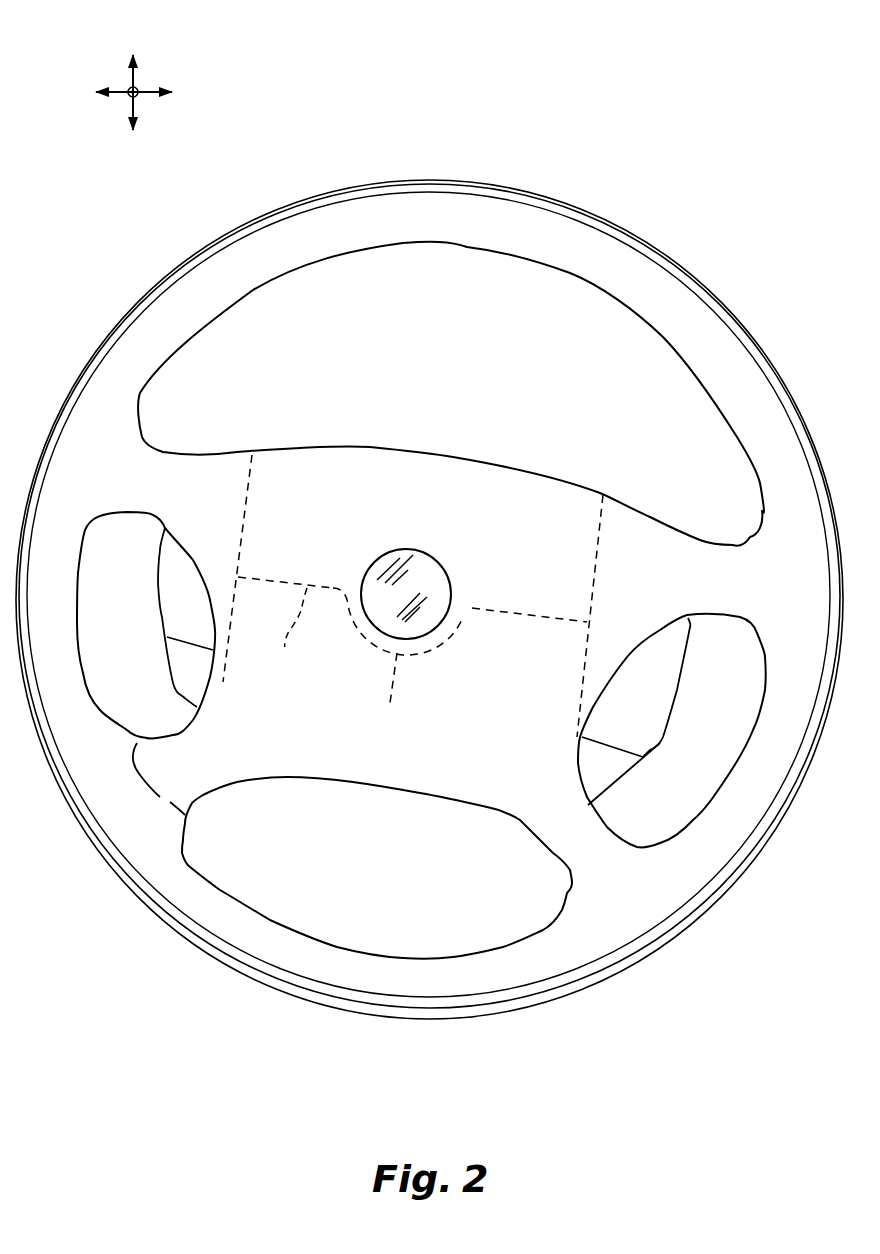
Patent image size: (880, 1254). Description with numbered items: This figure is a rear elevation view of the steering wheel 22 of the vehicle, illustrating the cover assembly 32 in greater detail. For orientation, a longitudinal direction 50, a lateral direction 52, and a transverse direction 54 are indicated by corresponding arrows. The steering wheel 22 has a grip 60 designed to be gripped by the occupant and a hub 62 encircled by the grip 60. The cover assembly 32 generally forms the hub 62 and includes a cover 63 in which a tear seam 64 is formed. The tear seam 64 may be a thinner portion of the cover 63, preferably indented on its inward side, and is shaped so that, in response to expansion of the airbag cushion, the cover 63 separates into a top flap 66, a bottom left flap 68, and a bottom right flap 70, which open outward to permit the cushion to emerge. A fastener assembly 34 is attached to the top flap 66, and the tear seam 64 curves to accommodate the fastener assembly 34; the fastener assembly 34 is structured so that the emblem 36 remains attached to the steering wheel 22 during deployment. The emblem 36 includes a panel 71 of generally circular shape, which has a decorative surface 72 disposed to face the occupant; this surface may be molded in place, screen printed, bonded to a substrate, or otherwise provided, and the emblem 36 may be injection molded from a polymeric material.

The steering wheel 22 is at (440, 532).
The longitudinal direction 50 is at (137, 97).
The lateral direction 52 is at (152, 88).
The transverse direction 54 is at (131, 74).
The grip 60 is at (745, 380).
The hub 62 is at (374, 392).
The cover 63 is at (317, 500).
The cover assembly 32 is at (525, 490).
The fastener assembly 34 is at (432, 556).
The emblem 36 is at (466, 573).
The tear seam 64 is at (307, 637).
The top flap 66 is at (383, 536).
The bottom left flap 68 is at (346, 727).
The bottom right flap 70 is at (532, 731).
The panel 71 is at (452, 629).
The decorative surface 72 is at (433, 567).